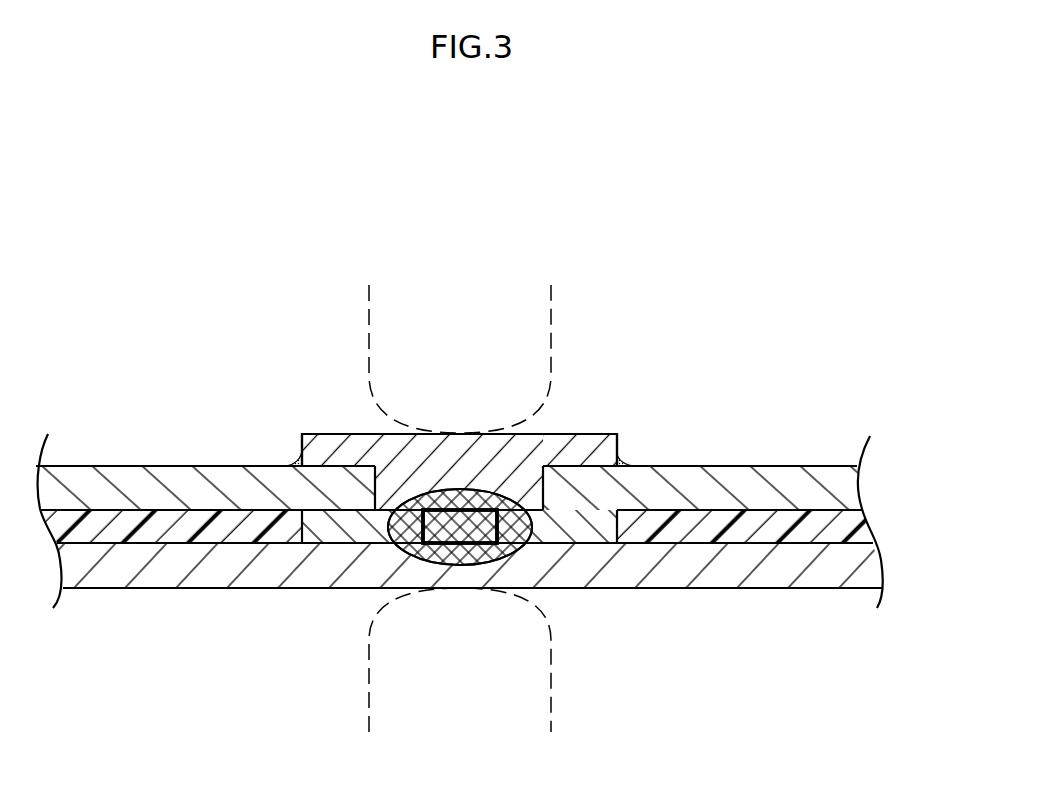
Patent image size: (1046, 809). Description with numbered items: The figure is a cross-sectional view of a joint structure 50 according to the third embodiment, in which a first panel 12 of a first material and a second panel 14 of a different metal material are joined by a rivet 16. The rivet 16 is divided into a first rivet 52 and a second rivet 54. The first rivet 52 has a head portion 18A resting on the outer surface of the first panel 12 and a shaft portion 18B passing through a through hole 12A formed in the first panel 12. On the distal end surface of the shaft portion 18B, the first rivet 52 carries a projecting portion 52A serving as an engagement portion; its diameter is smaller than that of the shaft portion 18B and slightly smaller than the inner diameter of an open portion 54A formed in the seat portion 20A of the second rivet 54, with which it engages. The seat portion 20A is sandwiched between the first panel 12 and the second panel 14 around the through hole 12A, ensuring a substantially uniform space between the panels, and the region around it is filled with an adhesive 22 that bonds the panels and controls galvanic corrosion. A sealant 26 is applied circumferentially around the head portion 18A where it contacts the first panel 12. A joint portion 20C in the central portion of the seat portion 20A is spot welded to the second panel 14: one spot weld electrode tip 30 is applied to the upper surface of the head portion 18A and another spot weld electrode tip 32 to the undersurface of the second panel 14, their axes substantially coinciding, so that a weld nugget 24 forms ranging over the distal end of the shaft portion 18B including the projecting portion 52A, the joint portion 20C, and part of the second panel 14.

The first panel 12 is at (788, 465).
The through hole 12A is at (378, 482).
The second panel 14 is at (752, 592).
The rivet 16 is at (575, 402).
The head portion 18A is at (342, 442).
The shaft portion 18B is at (548, 490).
The seat portion 20A is at (333, 530).
The joint portion 20C is at (418, 532).
The adhesive 22 is at (163, 520).
The weld nugget 24 is at (512, 545).
The sealant 26 is at (287, 455).
The spot weld electrode tip 30 is at (551, 307).
The spot weld electrode tip 32 is at (551, 720).
The joint structure 50 is at (702, 372).
The first rivet 52 is at (600, 432).
The projecting portion 52A is at (468, 523).
The second rivet 54 is at (573, 525).
The open portion 54A is at (453, 490).